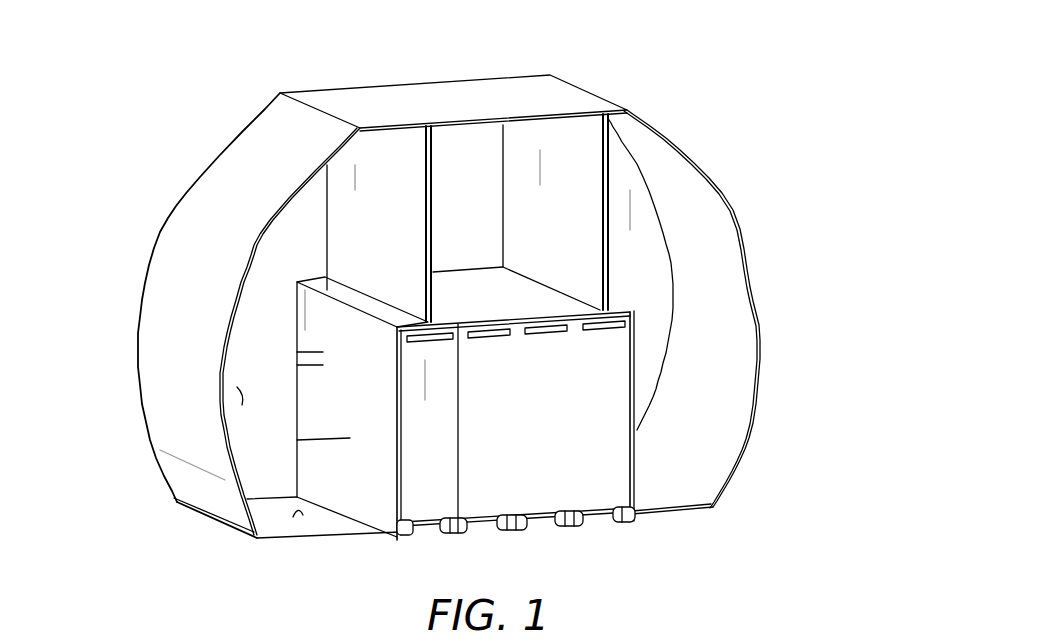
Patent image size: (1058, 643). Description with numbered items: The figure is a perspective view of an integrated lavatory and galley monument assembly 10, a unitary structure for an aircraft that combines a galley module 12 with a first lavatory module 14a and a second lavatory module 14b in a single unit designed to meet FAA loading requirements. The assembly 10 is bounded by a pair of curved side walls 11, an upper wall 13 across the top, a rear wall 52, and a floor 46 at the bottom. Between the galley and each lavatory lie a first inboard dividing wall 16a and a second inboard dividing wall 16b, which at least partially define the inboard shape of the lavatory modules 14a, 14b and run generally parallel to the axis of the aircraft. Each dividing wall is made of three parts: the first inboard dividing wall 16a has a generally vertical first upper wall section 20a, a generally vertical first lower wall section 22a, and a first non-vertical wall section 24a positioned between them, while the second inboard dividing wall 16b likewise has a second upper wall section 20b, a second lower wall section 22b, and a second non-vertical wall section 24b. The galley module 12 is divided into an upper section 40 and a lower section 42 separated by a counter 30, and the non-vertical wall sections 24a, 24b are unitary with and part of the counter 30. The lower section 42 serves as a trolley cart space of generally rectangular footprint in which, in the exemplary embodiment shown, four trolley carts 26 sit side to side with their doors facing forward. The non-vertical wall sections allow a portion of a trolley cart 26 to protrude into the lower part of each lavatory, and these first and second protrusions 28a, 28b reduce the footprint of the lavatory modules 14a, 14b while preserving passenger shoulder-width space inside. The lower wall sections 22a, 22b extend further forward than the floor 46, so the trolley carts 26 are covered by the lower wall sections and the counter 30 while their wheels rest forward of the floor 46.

The integrated lavatory and galley monument assembly 10 is at (698, 78).
The side wall 11 is at (217, 177).
The galley module 12 is at (455, 158).
The upper wall 13 is at (330, 100).
The first lavatory module 14a is at (265, 298).
The second lavatory module 14b is at (703, 205).
The first inboard dividing wall 16a is at (297, 365).
The second inboard dividing wall 16b is at (633, 395).
The first upper wall section 20a is at (377, 173).
The second upper wall section 20b is at (607, 183).
The first lower wall section 22a is at (350, 438).
The second lower wall section 22b is at (633, 368).
The first non-vertical wall section 24a is at (325, 287).
The second non-vertical wall section 24b is at (622, 300).
The trolley cart 26 is at (620, 432).
The first protrusion 28a is at (297, 352).
The second protrusion 28b is at (633, 335).
The counter 30 is at (490, 300).
The upper section 40 is at (580, 165).
The lower section 42 is at (497, 480).
The floor 46 is at (293, 517).
The rear wall 52 is at (237, 387).